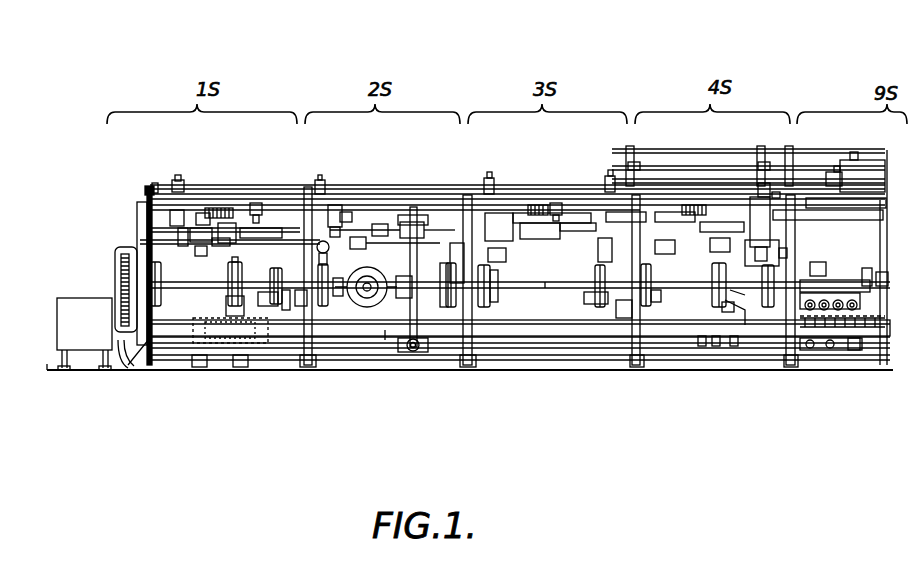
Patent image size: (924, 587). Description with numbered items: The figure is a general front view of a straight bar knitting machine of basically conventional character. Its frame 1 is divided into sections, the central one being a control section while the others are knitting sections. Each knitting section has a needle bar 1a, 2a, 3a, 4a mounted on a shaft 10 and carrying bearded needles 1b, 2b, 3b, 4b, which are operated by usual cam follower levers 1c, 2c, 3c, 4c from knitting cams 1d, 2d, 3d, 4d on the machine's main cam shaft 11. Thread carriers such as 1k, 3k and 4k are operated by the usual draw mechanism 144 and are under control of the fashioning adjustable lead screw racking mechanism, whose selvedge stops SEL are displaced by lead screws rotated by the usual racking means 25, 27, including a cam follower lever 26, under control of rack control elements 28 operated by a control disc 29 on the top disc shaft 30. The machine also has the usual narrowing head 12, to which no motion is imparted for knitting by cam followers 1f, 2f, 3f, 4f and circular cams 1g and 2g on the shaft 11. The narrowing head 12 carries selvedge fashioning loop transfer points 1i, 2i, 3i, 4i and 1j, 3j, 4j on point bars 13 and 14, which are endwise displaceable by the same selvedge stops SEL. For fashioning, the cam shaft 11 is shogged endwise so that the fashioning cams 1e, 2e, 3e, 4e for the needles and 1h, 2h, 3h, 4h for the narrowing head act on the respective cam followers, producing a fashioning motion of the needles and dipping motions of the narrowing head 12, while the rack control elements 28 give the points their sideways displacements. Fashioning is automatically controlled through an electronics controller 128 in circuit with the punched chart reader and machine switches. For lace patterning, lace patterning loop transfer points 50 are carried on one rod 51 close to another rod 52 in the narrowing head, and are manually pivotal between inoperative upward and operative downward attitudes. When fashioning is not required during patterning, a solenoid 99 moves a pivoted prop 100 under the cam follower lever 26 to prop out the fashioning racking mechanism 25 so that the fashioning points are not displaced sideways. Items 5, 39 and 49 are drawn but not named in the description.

The frame 1 is at (388, 336).
The needle bar 1a is at (216, 218).
The bearded needles 1b is at (185, 228).
The cam follower lever 1c is at (278, 257).
The knitting cam 1d is at (287, 310).
The fashioning cam 1e is at (276, 306).
The cam follower 1f is at (130, 247).
The circular cam 1g is at (156, 307).
The fashioning cam 1h is at (132, 362).
The selvedge fashioning loop transfer point 1i is at (187, 246).
The selvedge fashioning loop transfer point 1j is at (260, 225).
The thread carrier 1k is at (201, 256).
The needle bar 2a is at (356, 220).
The bearded needles 2b is at (338, 215).
The cam follower lever 2c is at (450, 250).
The knitting cam 2d is at (450, 308).
The fashioning cam 2e is at (447, 308).
The cam follower 2f is at (300, 203).
The circular cam 2g is at (322, 307).
The fashioning cam 2h is at (303, 306).
The selvedge fashioning loop transfer point 2i is at (347, 215).
The needle bar 3a is at (558, 228).
The bearded needles 3b is at (515, 222).
The cam follower lever 3c is at (600, 254).
The knitting cam 3d is at (600, 318).
The fashioning cam 3e is at (595, 298).
The cam follower 3f is at (456, 200).
The fashioning cam 3h is at (482, 308).
The selvedge fashioning loop transfer point 3i is at (521, 213).
The selvedge fashioning loop transfer point 3j is at (556, 213).
The thread carrier 3k is at (536, 215).
The needle bar 4a is at (713, 222).
The bearded needles 4b is at (672, 217).
The cam follower lever 4c is at (776, 252).
The knitting cam 4d is at (782, 280).
The fashioning cam 4e is at (725, 308).
The cam follower 4f is at (618, 222).
The fashioning cam 4h is at (646, 308).
The selvedge fashioning loop transfer point 4i is at (672, 237).
The selvedge fashioning loop transfer point 4j is at (714, 224).
The thread carrier 4k is at (660, 240).
The member 5 is at (224, 244).
The shaft 10 is at (147, 220).
The main cam shaft 11 is at (546, 290).
The narrowing head 12 is at (146, 188).
The point bar 13 is at (200, 228).
The point bar 14 is at (228, 222).
The racking means 25 is at (774, 193).
The cam follower lever 26 is at (714, 346).
The racking means 27 is at (722, 307).
The rack control elements 28 is at (768, 197).
The control disc 29 is at (763, 183).
The top disc shaft 30 is at (832, 155).
The member 39 is at (495, 297).
The member 49 is at (661, 295).
The lace patterning loop transfer points 50 is at (199, 215).
The rod 51 is at (154, 184).
The rod 52 is at (240, 256).
The solenoid 99 is at (733, 346).
The pivoted prop 100 is at (700, 346).
The electronics controller 128 is at (75, 307).
The draw mechanism 144 is at (405, 312).
The selvedge stops SEL is at (860, 172).